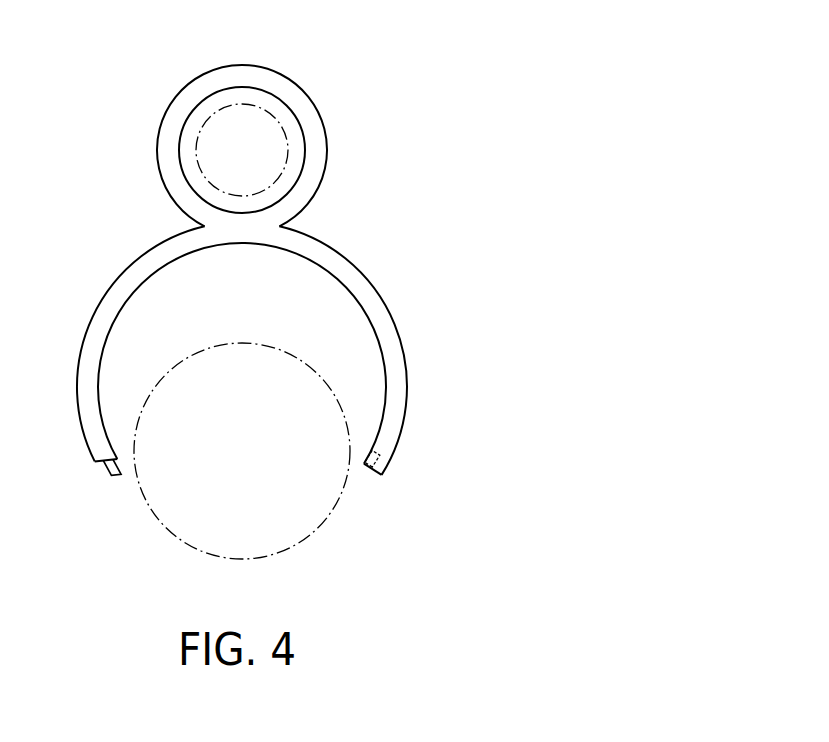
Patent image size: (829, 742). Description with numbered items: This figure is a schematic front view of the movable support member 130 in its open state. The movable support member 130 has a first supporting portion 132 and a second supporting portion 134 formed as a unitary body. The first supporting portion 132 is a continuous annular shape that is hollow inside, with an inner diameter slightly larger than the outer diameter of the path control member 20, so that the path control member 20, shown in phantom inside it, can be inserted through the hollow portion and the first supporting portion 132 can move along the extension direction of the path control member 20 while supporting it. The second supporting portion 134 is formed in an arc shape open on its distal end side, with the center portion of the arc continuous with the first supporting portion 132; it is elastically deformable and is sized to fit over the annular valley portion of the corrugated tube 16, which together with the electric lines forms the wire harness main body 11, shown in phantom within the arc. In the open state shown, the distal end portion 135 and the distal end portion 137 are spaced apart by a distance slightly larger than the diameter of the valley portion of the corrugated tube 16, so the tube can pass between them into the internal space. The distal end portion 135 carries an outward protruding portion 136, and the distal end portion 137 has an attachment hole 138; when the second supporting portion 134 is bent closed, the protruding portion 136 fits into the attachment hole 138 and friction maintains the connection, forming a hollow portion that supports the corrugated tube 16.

The movable support member 130 is at (248, 281).
The first supporting portion 132 is at (317, 155).
The second supporting portion 134 is at (372, 300).
The distal end portion 135 is at (88, 450).
The protruding portion 136 is at (110, 480).
The distal end portion 137 is at (398, 443).
The attachment hole 138 is at (368, 472).
The path control member 20 is at (287, 138).
The wire harness main body 11 is at (287, 547).
The corrugated tube 16 is at (242, 451).